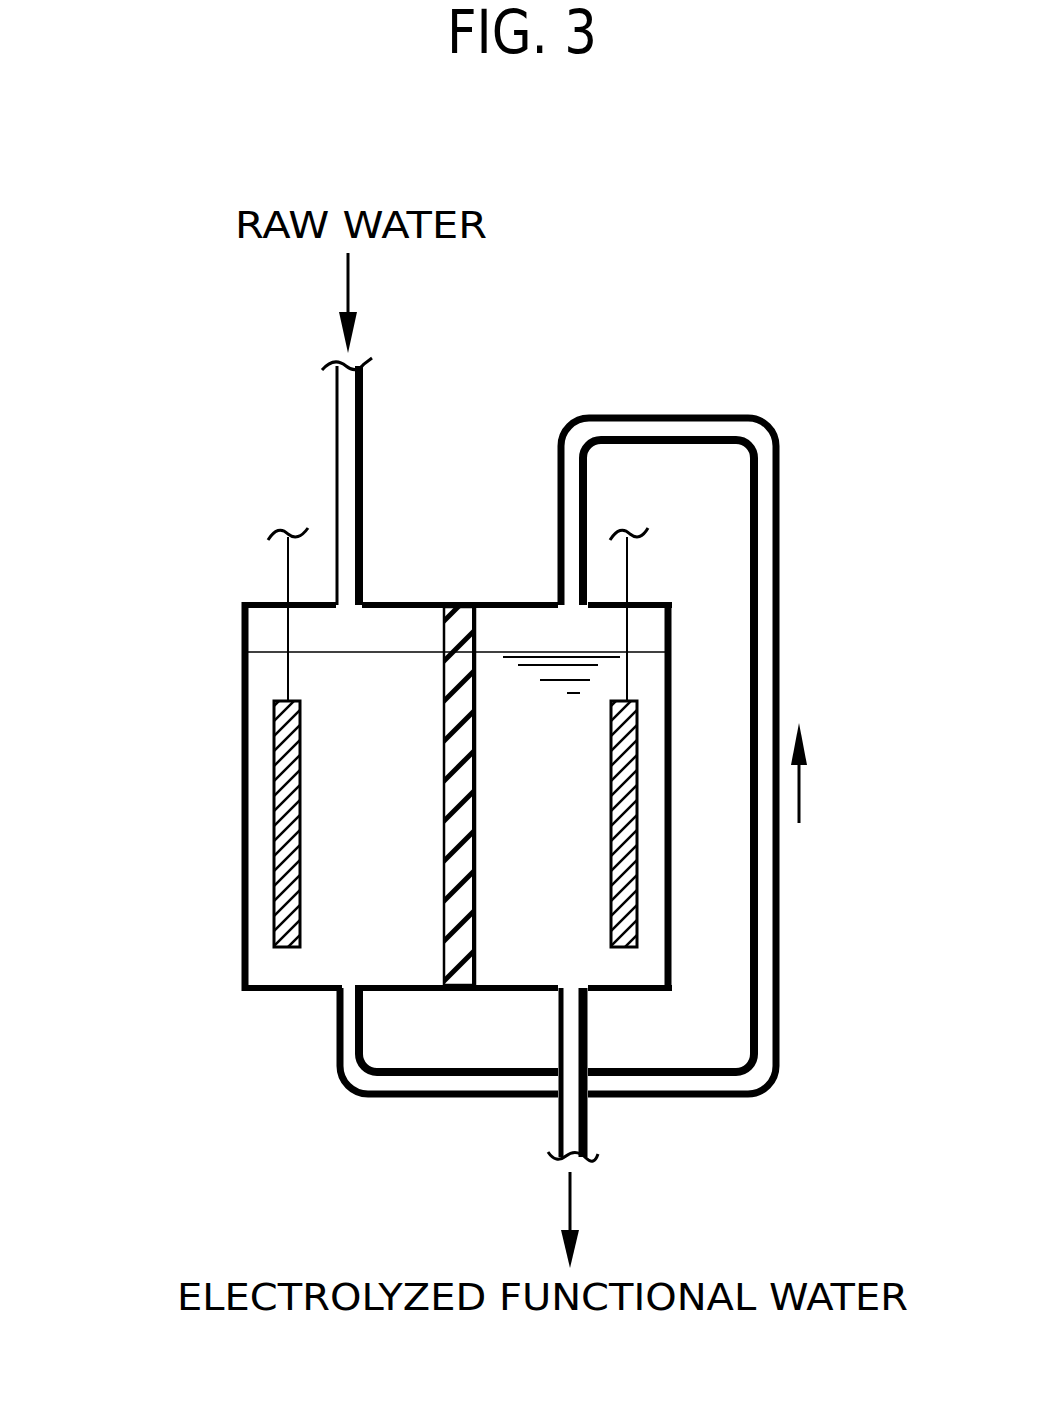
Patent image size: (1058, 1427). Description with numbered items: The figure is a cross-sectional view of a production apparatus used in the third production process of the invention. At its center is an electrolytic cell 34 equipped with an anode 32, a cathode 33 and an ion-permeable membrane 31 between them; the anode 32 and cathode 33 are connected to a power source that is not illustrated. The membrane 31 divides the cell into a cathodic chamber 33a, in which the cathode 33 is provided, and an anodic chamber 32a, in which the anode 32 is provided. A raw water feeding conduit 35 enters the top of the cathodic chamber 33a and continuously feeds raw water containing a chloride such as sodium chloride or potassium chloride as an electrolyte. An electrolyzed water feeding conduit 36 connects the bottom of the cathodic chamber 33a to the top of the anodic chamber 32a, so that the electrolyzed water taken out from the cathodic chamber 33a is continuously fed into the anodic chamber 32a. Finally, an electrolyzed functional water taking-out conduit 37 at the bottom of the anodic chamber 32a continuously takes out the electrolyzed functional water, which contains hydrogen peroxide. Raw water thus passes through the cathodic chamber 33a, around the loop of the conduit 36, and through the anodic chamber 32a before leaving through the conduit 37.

The ion-permeable membrane 31 is at (477, 818).
The anode 32 is at (638, 815).
The anodic chamber 32a is at (617, 993).
The cathode 33 is at (274, 806).
The cathodic chamber 33a is at (310, 994).
The electrolytic cell 34 is at (194, 664).
The raw water feeding conduit 35 is at (364, 440).
The electrolyzed water feeding conduit 36 is at (780, 937).
The electrolyzed functional water taking-out conduit 37 is at (557, 1133).